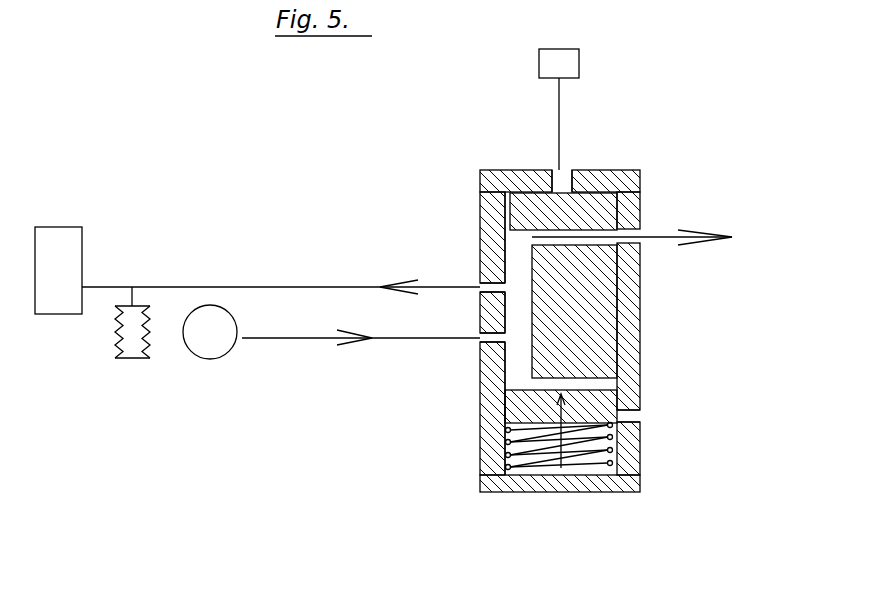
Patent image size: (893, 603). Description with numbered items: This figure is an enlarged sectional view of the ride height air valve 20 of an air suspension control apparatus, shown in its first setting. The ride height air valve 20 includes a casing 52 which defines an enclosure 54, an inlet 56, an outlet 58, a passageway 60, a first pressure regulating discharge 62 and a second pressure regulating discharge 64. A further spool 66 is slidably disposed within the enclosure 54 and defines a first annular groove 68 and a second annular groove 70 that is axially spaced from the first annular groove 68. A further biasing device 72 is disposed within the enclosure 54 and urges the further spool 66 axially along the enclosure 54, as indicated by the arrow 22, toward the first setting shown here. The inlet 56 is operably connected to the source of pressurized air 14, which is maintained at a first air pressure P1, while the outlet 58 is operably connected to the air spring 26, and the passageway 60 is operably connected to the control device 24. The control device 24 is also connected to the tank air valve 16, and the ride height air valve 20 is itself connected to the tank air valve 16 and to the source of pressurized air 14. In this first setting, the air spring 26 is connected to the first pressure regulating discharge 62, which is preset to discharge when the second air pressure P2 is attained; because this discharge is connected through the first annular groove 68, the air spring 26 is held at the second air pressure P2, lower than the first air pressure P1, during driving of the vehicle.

The source of pressurized air 14 is at (206, 359).
The tank air valve 16 is at (52, 239).
The ride height air valve 20 is at (556, 293).
The arrow 22 is at (572, 460).
The control device 24 is at (572, 70).
The air spring 26 is at (130, 342).
The casing 52 is at (490, 455).
The enclosure 54 is at (520, 362).
The inlet 56 is at (490, 348).
The outlet 58 is at (492, 276).
The passageway 60 is at (556, 170).
The first pressure regulating discharge 62 is at (606, 227).
The second pressure regulating discharge 64 is at (627, 408).
The further spool 66 is at (587, 300).
The first annular groove 68 is at (500, 186).
The second annular groove 70 is at (556, 391).
The further biasing device 72 is at (640, 433).
The first air pressure P1 is at (226, 340).
The second air pressure P2 is at (640, 237).